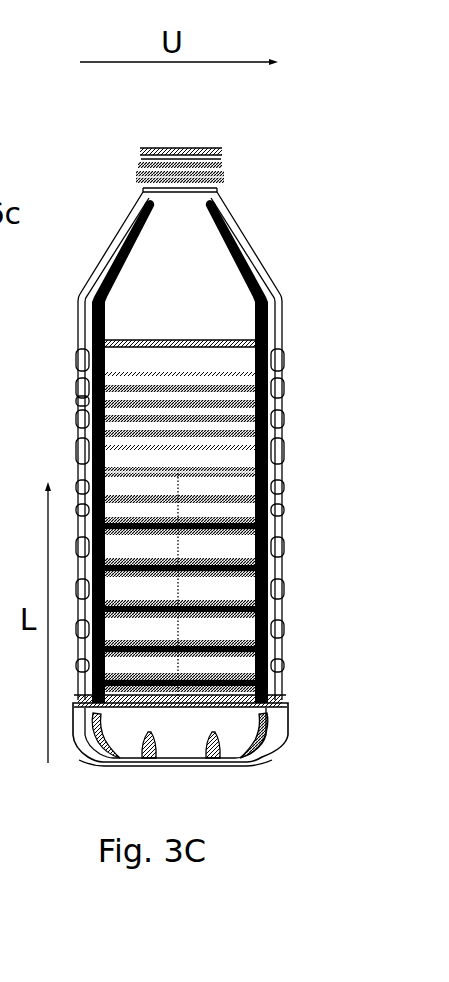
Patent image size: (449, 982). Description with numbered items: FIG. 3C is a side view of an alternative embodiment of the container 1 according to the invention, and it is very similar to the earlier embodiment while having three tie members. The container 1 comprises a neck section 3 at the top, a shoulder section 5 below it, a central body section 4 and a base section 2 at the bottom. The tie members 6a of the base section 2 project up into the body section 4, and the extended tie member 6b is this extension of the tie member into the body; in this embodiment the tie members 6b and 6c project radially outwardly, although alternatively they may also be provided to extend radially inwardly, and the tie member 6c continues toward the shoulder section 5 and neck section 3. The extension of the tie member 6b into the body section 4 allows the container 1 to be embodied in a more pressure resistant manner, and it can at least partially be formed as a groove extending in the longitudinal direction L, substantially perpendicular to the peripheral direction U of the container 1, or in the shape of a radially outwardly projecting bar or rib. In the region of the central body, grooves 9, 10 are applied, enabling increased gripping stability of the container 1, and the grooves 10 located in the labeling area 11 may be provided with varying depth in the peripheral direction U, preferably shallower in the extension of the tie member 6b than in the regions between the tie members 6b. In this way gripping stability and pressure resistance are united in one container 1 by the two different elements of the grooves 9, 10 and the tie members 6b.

The container 1 is at (292, 200).
The base section 2 is at (320, 752).
The neck section 3 is at (237, 169).
The body section 4 is at (318, 610).
The shoulder section 5 is at (284, 258).
The tie member 6a is at (267, 762).
The extended tie member 6b is at (267, 532).
The tie member 6c is at (267, 313).
The groove 9 is at (277, 653).
The groove 10 is at (82, 400).
The labeling area 11 is at (308, 435).